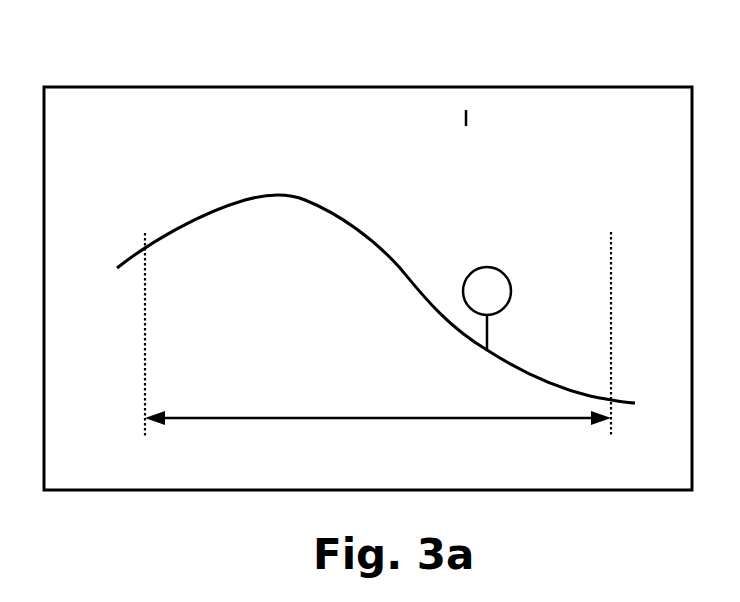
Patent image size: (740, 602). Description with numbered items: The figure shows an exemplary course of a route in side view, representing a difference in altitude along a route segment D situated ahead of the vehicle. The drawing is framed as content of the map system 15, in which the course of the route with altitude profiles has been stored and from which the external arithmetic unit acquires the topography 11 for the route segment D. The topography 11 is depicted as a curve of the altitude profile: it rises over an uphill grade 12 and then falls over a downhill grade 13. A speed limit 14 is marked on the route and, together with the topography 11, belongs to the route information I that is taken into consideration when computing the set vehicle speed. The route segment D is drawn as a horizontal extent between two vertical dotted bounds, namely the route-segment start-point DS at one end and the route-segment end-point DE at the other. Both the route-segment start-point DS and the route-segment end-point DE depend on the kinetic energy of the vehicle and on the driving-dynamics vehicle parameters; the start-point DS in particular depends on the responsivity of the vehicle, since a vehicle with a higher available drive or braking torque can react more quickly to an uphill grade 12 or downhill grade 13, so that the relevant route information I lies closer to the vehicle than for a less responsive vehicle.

The map system 15 is at (367, 72).
The downhill grade 13 is at (186, 205).
The topography 11 is at (500, 226).
The uphill grade 12 is at (390, 314).
The speed limit 14 is at (493, 313).
The route information I is at (444, 192).
The route segment D is at (377, 420).
The route-segment end-point DE is at (147, 430).
The route-segment start-point DS is at (609, 430).